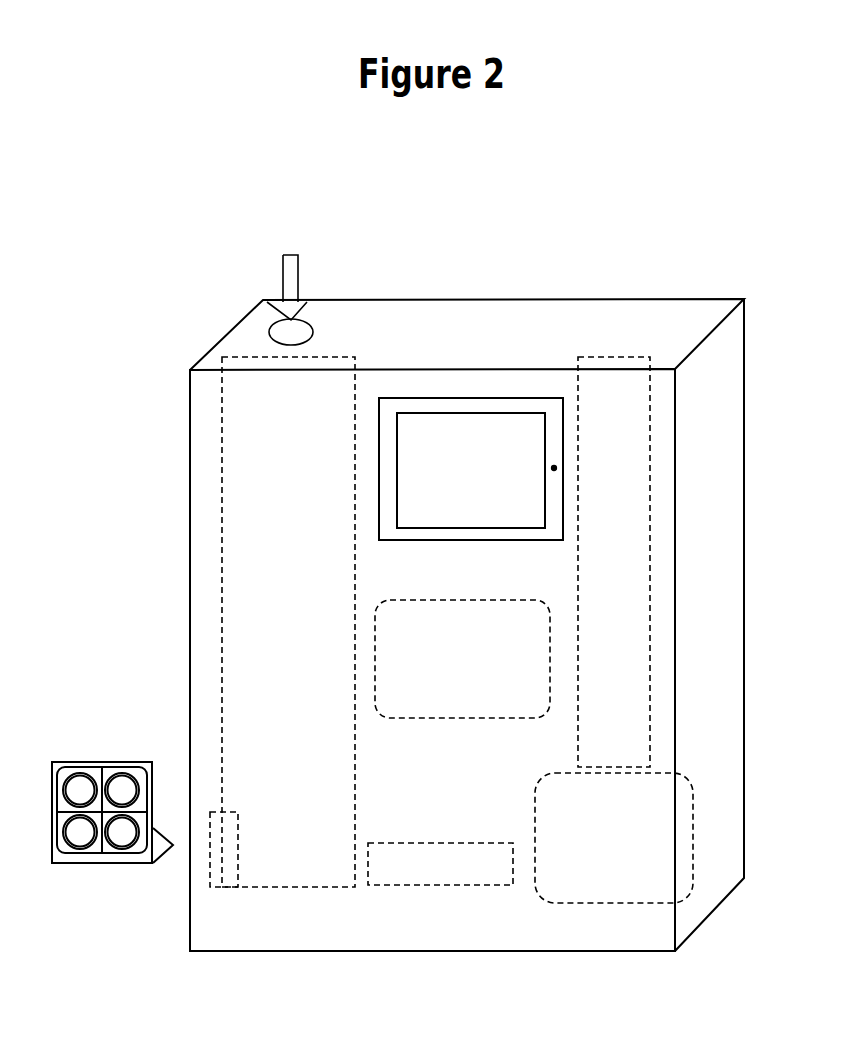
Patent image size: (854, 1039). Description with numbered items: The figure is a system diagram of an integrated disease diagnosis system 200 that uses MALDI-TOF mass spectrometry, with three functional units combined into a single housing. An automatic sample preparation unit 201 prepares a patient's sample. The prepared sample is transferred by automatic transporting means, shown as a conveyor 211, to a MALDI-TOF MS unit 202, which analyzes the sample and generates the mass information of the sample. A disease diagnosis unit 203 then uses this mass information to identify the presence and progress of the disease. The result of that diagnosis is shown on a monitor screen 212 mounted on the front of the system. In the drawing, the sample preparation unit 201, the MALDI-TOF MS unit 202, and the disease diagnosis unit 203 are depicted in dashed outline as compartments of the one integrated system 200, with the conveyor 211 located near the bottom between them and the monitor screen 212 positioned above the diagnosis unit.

The integrated disease diagnosis system 200 is at (190, 407).
The automatic sample preparation unit 201 is at (221, 491).
The MALDI-TOF MS unit 202 is at (651, 564).
The disease diagnosis unit 203 is at (437, 719).
The conveyor 211 is at (458, 842).
The monitor screen 212 is at (563, 447).